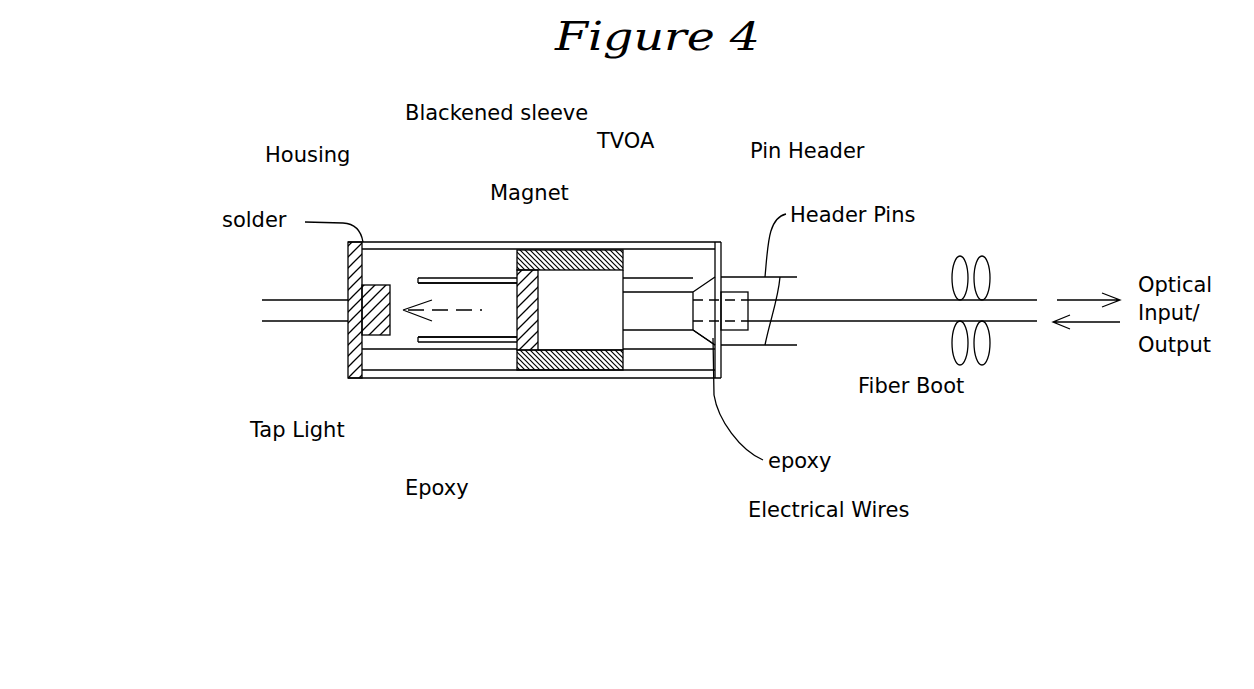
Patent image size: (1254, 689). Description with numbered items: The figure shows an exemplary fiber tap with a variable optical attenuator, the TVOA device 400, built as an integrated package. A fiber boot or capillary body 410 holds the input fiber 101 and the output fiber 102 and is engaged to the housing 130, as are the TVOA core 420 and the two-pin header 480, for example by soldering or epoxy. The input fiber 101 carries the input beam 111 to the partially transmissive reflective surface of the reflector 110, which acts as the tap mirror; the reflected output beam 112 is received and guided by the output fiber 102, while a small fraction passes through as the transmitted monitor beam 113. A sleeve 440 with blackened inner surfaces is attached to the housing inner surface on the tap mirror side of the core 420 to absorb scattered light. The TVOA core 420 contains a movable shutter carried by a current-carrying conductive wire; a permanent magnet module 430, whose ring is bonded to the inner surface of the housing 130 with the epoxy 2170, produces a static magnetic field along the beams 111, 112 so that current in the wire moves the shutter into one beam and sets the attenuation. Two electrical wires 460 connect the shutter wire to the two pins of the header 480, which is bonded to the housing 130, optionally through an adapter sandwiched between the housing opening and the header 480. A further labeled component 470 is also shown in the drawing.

The TVOA device 400 is at (878, 85).
The housing 130 is at (373, 242).
The sleeve 440 is at (432, 283).
The transmitted beam 113 is at (440, 313).
The reflector 110 is at (513, 325).
The permanent magnet module 430 is at (600, 250).
The TVOA core 420 is at (623, 278).
The two-pin header 480 is at (721, 272).
The fiber boot or capillary body 410 is at (743, 348).
The epoxy 470 is at (600, 370).
The epoxy 2170 is at (526, 488).
The electrical wires 460 is at (698, 330).
The input fiber 101 is at (840, 293).
The output fiber 102 is at (840, 328).
The input beam 111 is at (1088, 286).
The reflected output beam 112 is at (1086, 336).